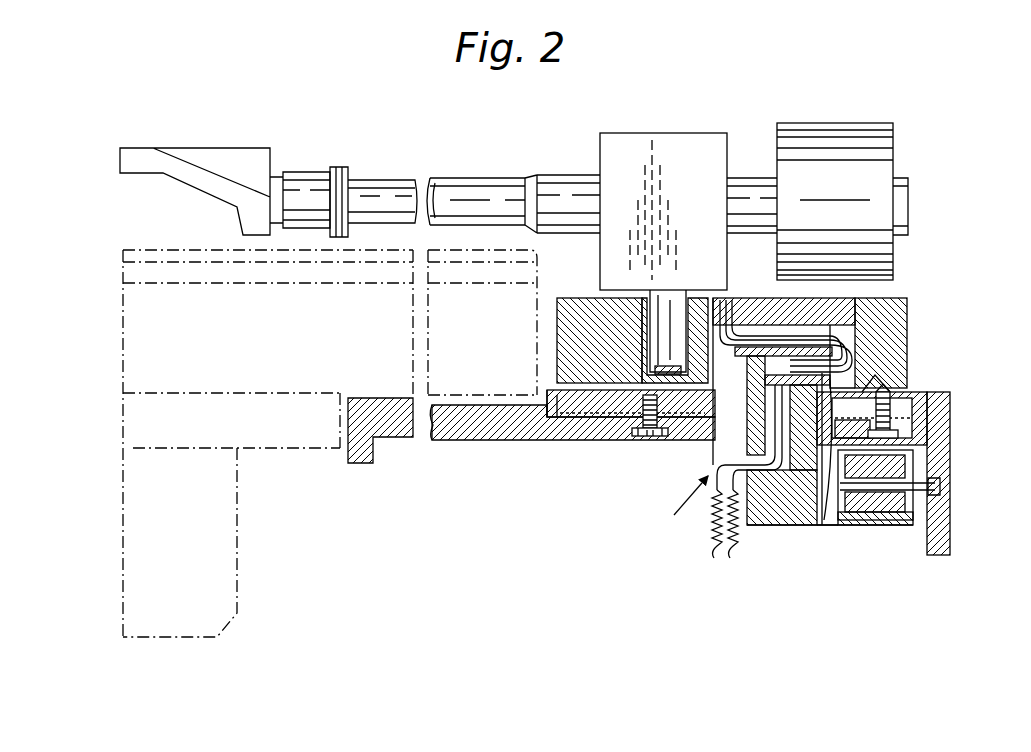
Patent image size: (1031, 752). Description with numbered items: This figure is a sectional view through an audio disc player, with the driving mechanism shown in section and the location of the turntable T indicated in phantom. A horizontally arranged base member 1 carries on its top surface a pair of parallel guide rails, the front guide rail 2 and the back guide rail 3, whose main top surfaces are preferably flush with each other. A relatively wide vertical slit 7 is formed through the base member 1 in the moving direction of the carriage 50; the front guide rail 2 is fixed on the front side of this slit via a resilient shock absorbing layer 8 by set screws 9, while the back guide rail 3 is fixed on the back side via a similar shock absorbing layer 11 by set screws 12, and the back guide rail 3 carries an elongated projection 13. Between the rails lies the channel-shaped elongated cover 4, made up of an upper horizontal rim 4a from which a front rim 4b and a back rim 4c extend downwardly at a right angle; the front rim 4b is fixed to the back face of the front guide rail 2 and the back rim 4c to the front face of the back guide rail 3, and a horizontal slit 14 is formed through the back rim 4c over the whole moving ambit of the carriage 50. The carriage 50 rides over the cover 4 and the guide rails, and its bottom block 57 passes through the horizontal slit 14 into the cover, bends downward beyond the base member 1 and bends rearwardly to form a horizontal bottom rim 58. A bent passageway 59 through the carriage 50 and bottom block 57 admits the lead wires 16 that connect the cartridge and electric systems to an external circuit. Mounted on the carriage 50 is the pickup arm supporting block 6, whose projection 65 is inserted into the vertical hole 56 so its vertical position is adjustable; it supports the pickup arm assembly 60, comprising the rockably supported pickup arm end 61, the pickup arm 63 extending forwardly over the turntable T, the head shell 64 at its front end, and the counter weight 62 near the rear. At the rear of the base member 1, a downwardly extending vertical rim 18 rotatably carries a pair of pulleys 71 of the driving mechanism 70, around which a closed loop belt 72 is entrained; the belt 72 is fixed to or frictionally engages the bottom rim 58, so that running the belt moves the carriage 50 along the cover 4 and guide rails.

The turntable T is at (135, 344).
The base member 1 is at (452, 430).
The front guide rail 2 is at (558, 438).
The back guide rail 3 is at (905, 393).
The elongated cover 4 is at (791, 406).
The upper horizontal rim 4a is at (757, 337).
The front rim 4b is at (745, 457).
The back rim 4c is at (813, 525).
The pickup arm supporting block 6 is at (653, 150).
The vertical slit 7 is at (681, 504).
The shock absorbing layer 8 is at (592, 420).
The set screws 9 is at (632, 435).
The shock absorbing layer 11 is at (952, 403).
The set screws 12 is at (937, 432).
The elongated projection 13 is at (880, 386).
The horizontal slit 14 is at (892, 314).
The lead wires 16 is at (729, 560).
The vertical rim 18 is at (950, 527).
The carriage 50 is at (903, 329).
The vertical hole 56 is at (652, 308).
The bottom block 57 is at (782, 525).
The horizontal bottom rim 58 is at (872, 527).
The bent passageway 59 is at (860, 352).
The pickup arm assembly 60 is at (514, 187).
The pickup arm end 61 is at (576, 182).
The counter weight 62 is at (842, 136).
The pickup arm 63 is at (462, 190).
The head shell 64 is at (232, 162).
The projection 65 is at (665, 420).
The driving mechanism 70 is at (872, 501).
The pulleys 71 is at (895, 505).
The closed loop belt 72 is at (890, 447).